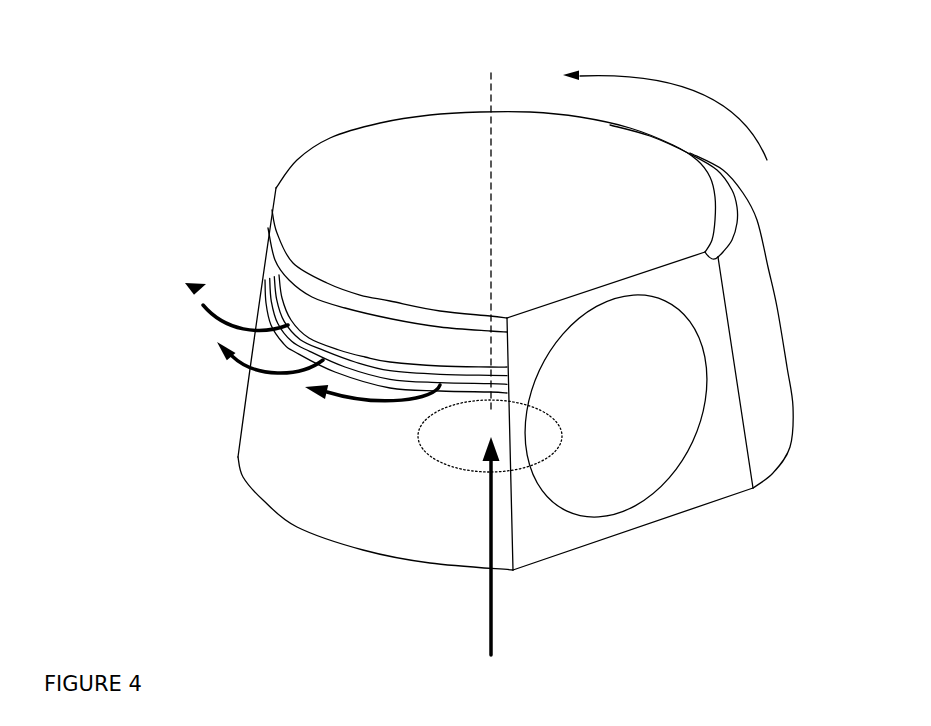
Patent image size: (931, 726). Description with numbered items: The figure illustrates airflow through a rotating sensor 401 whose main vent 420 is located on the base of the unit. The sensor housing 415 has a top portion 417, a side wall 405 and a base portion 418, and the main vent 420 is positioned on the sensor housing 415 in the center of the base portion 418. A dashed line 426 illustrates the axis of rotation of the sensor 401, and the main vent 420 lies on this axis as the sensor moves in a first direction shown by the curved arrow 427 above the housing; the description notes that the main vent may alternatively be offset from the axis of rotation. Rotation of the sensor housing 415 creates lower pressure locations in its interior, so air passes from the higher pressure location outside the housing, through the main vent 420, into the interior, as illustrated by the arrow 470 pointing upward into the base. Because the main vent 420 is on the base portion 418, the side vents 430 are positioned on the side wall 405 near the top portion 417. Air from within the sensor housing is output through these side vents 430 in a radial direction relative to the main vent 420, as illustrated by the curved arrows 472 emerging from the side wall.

The sensor 401 is at (795, 213).
The side wall 405 is at (247, 391).
The sensor housing 415 is at (277, 438).
The top portion 417 is at (320, 187).
The base portion 418 is at (263, 502).
The main vent 420 is at (443, 440).
The axis of rotation line 426 is at (490, 84).
The first direction arrow 427 is at (720, 104).
The side vents 430 is at (268, 288).
The airflow arrow through main vent 470 is at (489, 603).
The side vent airflow arrows 472 is at (203, 303).